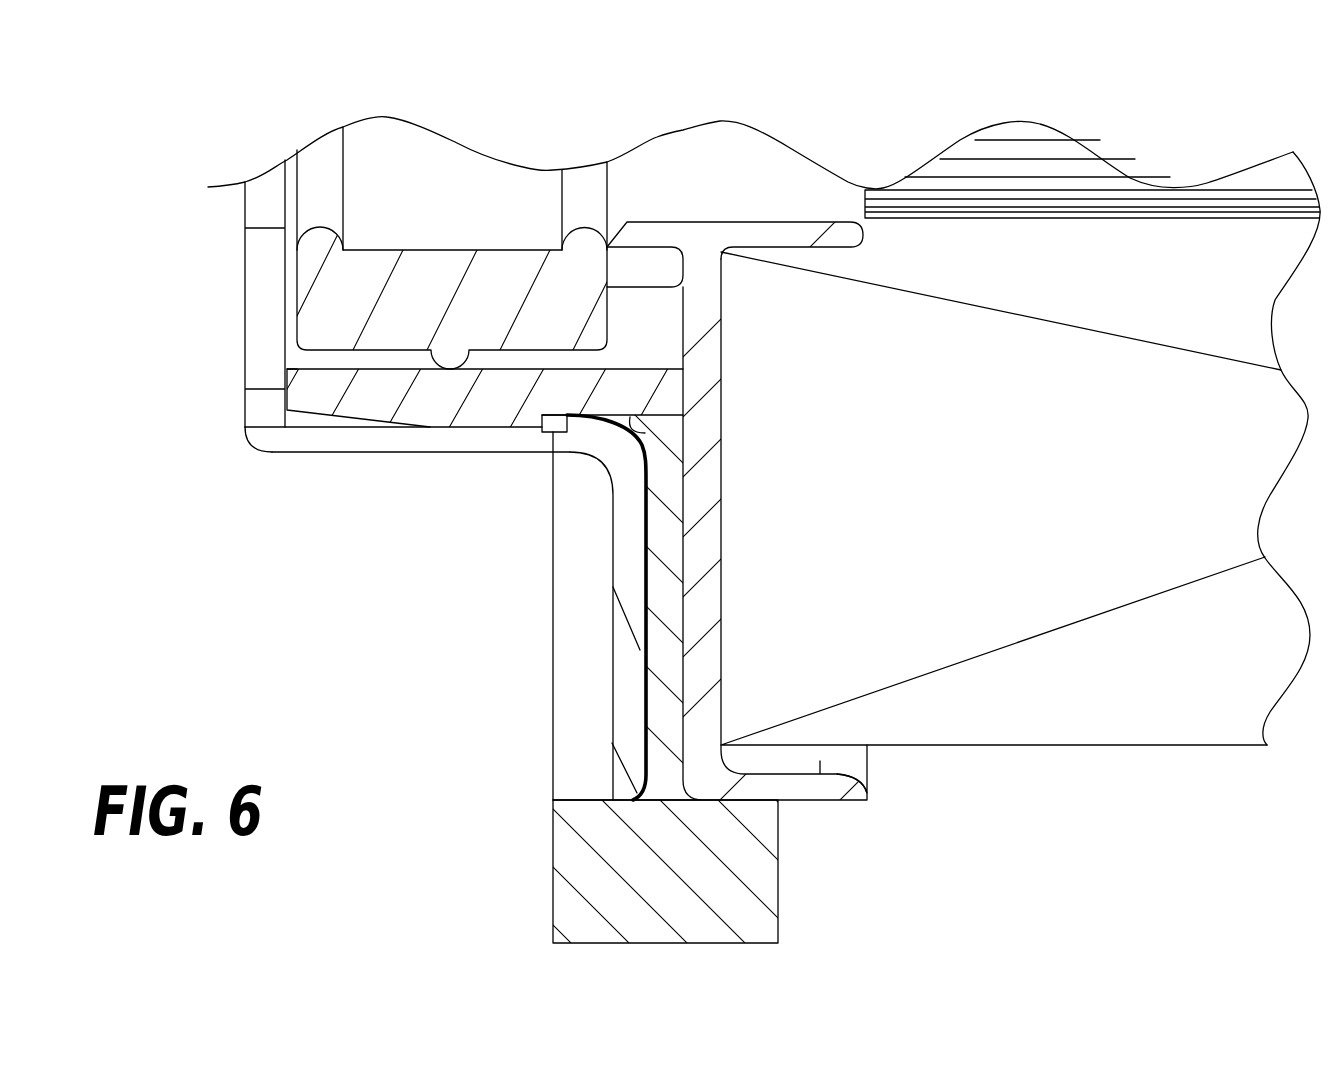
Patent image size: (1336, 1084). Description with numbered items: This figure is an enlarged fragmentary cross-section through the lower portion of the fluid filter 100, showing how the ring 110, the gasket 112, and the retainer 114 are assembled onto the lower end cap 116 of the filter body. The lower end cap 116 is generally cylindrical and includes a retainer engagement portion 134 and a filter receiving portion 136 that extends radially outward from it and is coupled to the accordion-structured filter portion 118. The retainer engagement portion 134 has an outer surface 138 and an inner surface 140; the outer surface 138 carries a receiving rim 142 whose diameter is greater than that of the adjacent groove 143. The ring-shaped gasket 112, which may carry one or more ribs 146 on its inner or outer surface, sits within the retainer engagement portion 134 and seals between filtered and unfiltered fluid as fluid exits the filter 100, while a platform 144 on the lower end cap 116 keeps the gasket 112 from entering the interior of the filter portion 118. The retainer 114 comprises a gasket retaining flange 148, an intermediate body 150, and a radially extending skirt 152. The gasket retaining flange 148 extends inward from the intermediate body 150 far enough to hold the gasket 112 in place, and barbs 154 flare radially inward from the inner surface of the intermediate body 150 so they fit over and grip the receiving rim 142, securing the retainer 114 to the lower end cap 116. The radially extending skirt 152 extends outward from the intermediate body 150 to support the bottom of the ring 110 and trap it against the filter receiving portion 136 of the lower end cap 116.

The filter 100 is at (1153, 775).
The ring 110 is at (560, 890).
The gasket 112 is at (447, 180).
The retainer 114 is at (253, 445).
The lower end cap 116 is at (843, 802).
The filter portion 118 is at (1040, 717).
The retainer engagement portion 134 is at (310, 400).
The filter receiving portion 136 is at (868, 762).
The outer surface 138 is at (628, 436).
The inner surface 140 is at (297, 367).
The receiving rim 142 is at (467, 423).
The groove 143 is at (647, 433).
The platform 144 is at (645, 215).
The ribs 146 is at (318, 165).
The gasket retaining flange 148 is at (243, 358).
The intermediate body 150 is at (282, 457).
The radially extending skirt 152 is at (612, 730).
The barbs 154 is at (552, 423).